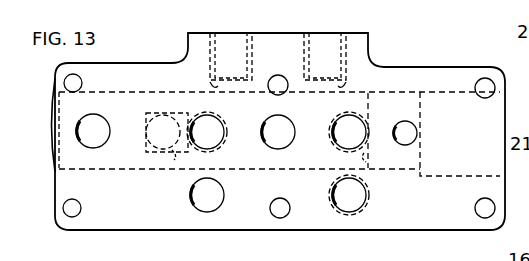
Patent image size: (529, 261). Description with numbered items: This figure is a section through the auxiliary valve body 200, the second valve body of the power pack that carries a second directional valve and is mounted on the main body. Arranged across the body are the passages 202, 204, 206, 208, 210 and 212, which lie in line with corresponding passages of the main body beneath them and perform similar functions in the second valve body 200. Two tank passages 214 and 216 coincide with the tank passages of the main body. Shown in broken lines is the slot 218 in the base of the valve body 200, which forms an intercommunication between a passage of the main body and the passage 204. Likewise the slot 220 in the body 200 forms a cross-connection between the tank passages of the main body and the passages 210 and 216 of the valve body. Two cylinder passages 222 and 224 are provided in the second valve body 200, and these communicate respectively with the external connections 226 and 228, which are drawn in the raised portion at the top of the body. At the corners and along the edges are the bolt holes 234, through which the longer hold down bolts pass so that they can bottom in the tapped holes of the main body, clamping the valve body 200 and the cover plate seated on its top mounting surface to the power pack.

The auxiliary valve body 200 is at (222, 230).
The passage 202 is at (93, 148).
The passage 204 is at (150, 125).
The passage 206 is at (215, 147).
The passage 208 is at (285, 147).
The passage 210 is at (362, 124).
The passage 212 is at (416, 135).
The tank passage 214 is at (192, 192).
The tank passage 216 is at (362, 196).
The slot 218 is at (176, 157).
The slot 220 is at (366, 158).
The cylinder passage 222 is at (212, 87).
The cylinder passage 224 is at (342, 90).
The external connection 226 is at (227, 43).
The external connection 228 is at (322, 40).
The bolt holes 234 is at (82, 83).